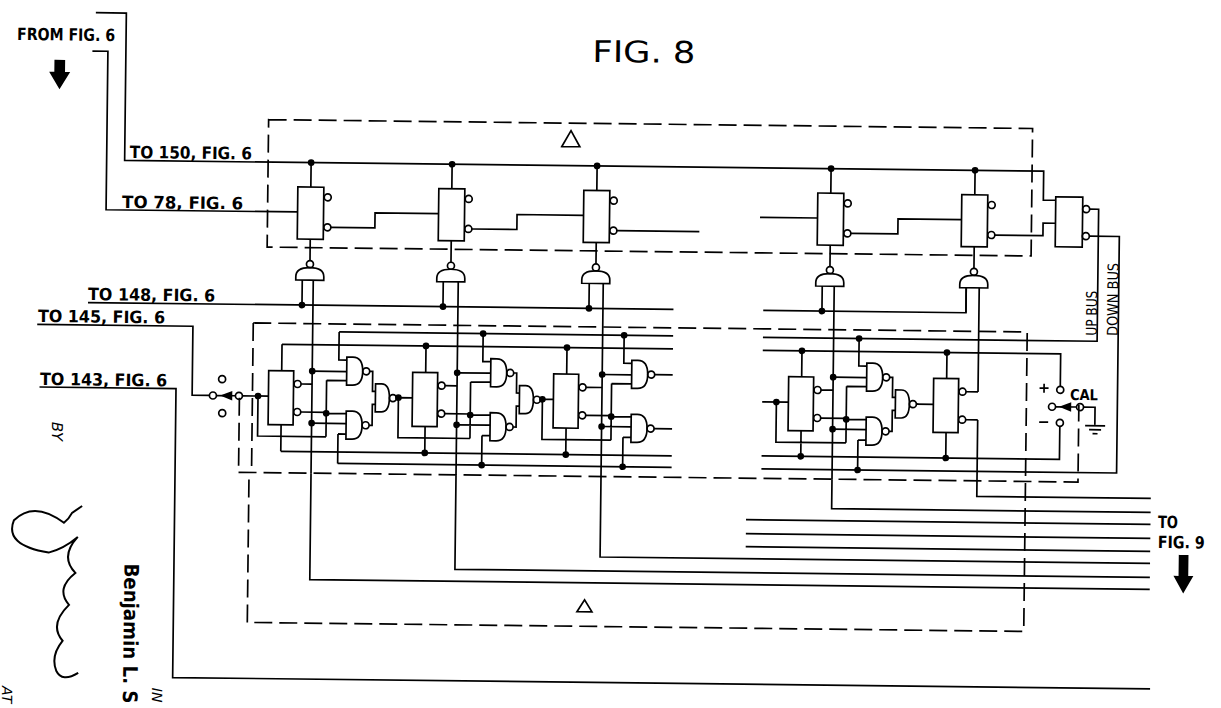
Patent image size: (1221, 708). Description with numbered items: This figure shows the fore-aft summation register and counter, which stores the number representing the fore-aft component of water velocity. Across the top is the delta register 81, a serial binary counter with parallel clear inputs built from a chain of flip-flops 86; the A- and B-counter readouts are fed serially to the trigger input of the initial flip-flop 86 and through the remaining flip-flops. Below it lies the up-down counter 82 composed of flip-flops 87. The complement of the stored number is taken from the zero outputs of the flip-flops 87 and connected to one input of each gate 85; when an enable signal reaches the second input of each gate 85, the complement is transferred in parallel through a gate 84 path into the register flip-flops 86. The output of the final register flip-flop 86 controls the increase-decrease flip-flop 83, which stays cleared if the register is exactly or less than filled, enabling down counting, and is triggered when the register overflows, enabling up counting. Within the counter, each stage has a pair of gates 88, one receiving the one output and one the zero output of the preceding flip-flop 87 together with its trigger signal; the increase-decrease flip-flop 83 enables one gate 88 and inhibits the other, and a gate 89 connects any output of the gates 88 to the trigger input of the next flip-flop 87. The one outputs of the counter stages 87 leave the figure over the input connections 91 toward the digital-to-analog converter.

The delta register 81 is at (516, 114).
The up-down counter 82 is at (639, 622).
The increase-decrease flip-flop 83 is at (1063, 190).
The gate 84 is at (320, 294).
The AND gate 85 is at (319, 271).
The register flip-flop 86 is at (321, 189).
The counter flip-flop 87 is at (294, 404).
The gate 88 is at (359, 361).
The gate 89 is at (383, 386).
The input connection 91 is at (317, 551).